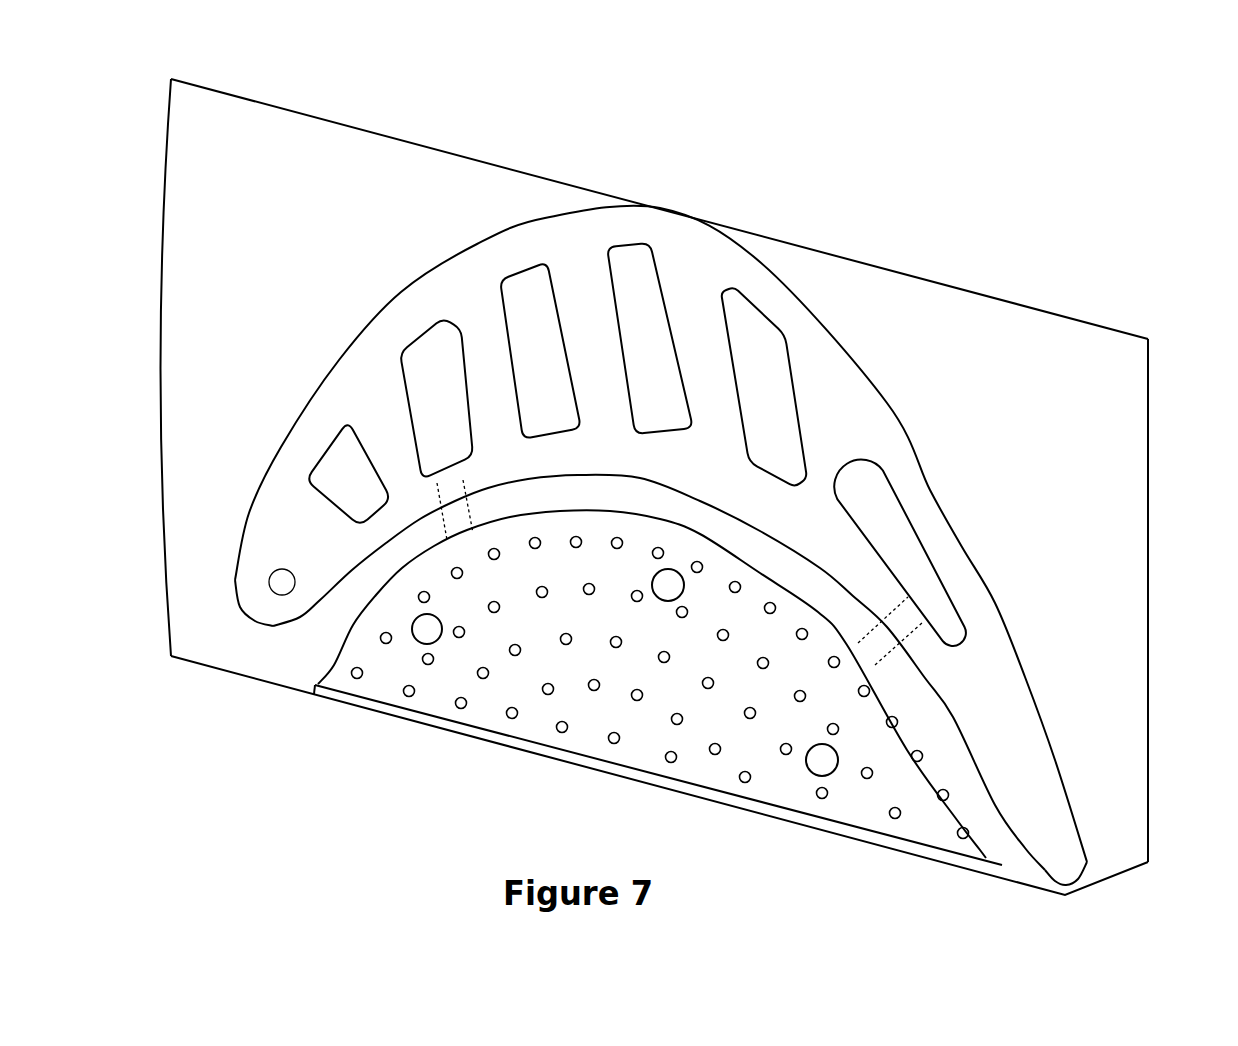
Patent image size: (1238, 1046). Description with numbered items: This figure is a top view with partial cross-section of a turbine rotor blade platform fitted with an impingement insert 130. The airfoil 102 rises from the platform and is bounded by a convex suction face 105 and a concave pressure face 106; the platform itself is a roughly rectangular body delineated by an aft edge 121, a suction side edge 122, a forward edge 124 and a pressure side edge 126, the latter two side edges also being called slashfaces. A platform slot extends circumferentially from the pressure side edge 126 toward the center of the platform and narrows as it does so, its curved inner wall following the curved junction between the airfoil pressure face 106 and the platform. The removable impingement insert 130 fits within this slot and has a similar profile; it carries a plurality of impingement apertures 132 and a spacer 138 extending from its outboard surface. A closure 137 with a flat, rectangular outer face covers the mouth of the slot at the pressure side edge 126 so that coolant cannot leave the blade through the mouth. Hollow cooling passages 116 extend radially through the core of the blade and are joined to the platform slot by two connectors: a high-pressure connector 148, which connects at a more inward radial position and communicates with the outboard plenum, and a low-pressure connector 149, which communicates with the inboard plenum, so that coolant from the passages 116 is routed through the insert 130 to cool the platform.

The airfoil 102 is at (544, 248).
The suction face 105 is at (478, 245).
The pressure face 106 is at (955, 720).
The cooling passages 116 is at (324, 485).
The aft edge 121 is at (1150, 495).
The suction side edge 122 is at (818, 248).
The forward edge 124 is at (163, 240).
The pressure side edge 126 is at (217, 672).
The impingement insert 130 is at (620, 676).
The impingement apertures 132 is at (512, 713).
The closure 137 is at (348, 694).
The spacer 138 is at (428, 635).
The high-pressure connector 148 is at (452, 493).
The low-pressure connector 149 is at (907, 628).